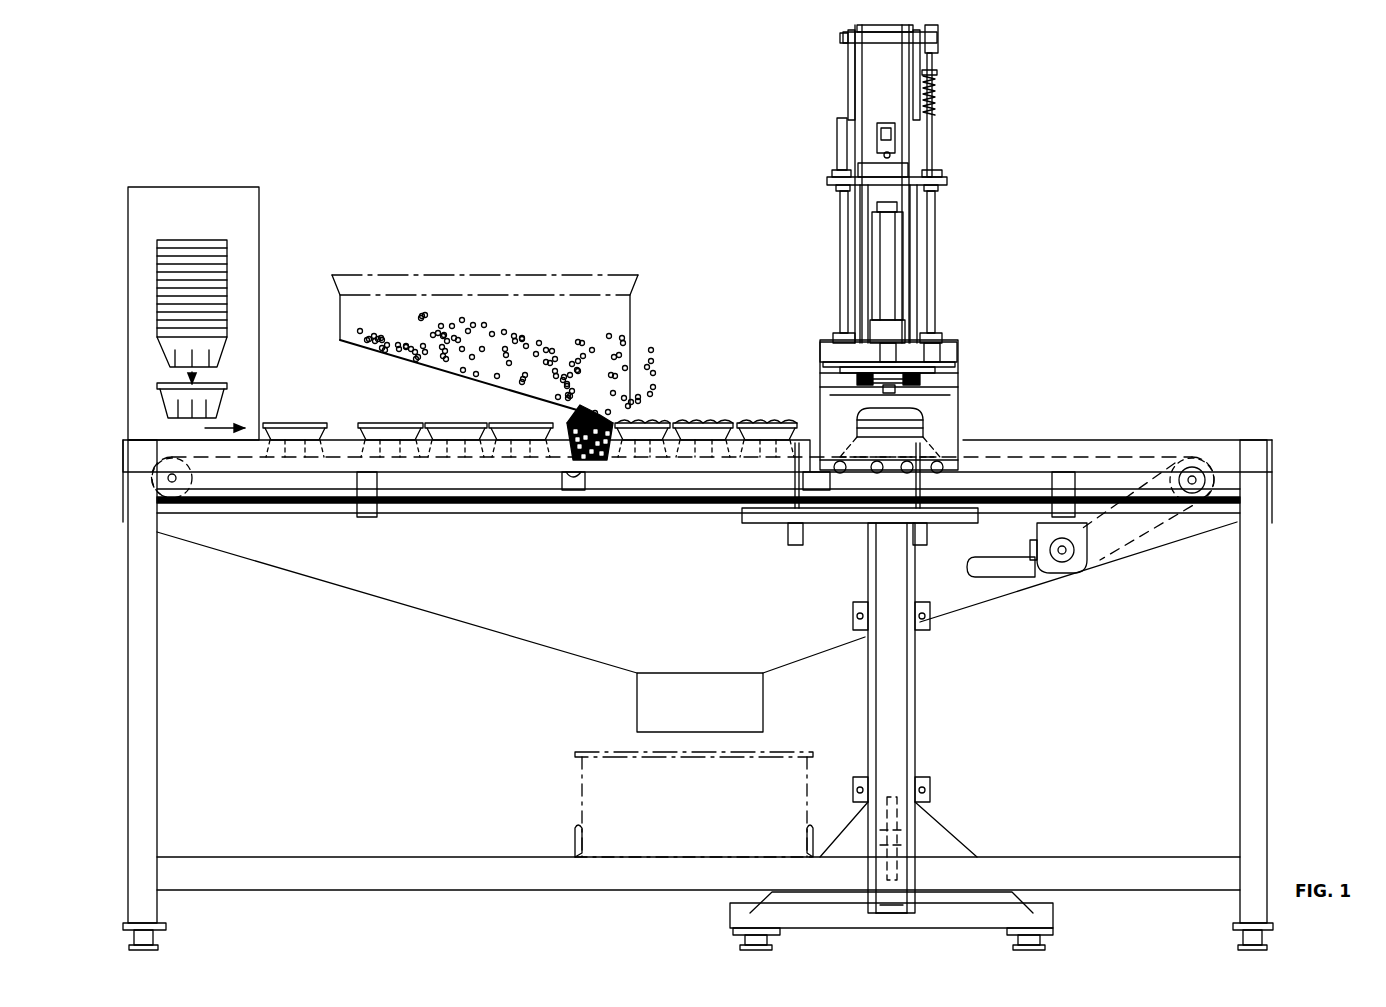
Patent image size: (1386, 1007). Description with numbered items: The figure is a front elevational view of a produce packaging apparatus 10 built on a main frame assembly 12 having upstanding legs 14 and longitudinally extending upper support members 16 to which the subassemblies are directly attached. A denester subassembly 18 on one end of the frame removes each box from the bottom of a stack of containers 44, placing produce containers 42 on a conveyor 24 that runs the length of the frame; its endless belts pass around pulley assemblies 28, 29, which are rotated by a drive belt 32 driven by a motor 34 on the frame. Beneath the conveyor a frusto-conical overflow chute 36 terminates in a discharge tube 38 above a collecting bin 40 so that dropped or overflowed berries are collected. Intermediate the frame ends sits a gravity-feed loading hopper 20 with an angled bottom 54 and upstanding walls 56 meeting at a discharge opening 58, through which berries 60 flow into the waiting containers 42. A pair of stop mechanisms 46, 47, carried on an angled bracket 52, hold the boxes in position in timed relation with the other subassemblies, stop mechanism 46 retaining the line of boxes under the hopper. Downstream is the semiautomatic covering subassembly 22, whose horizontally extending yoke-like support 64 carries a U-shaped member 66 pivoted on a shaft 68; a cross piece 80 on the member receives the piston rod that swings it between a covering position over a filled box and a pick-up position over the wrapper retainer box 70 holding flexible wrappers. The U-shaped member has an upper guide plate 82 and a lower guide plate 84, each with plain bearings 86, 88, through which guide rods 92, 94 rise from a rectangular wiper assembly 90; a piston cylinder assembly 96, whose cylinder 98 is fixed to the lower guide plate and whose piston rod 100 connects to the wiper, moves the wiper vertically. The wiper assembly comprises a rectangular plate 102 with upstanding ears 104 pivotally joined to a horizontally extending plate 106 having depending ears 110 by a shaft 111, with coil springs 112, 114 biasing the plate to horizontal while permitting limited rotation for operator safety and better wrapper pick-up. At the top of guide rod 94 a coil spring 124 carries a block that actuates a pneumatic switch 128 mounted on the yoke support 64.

The produce packaging apparatus 10 is at (465, 222).
The main frame assembly 12 is at (1292, 748).
The upstanding legs 14 is at (150, 620).
The upper support members 16 is at (499, 511).
The denester subassembly 18 is at (272, 226).
The loading hopper 20 is at (632, 305).
The semiautomatic covering subassembly 22 is at (950, 238).
The conveyor 24 is at (1138, 455).
The pulley assembly 28 is at (1200, 470).
The pulley assembly 29 is at (160, 464).
The drive belt 32 is at (1140, 553).
The motor 34 is at (1055, 570).
The overflow chute 36 is at (697, 597).
The discharge tube 38 is at (700, 702).
The collecting bin 40 is at (694, 804).
The produce containers 42 is at (366, 422).
The stack of containers 44 is at (150, 356).
The stop mechanism 46 is at (788, 538).
The stop mechanism 47 is at (918, 552).
The angled bracket 52 is at (960, 522).
The angled bottom 54 is at (448, 374).
The upstanding walls 56 is at (404, 311).
The discharge opening 58 is at (625, 416).
The berries 60 is at (568, 363).
The yoke-like support 64 is at (925, 66).
The U-shaped member 66 is at (914, 224).
The shaft 68 is at (888, 38).
The wrapper retainer box 70 is at (962, 433).
The cross piece 80 is at (905, 172).
The upper guide plate 82 is at (840, 186).
The lower guide plate 84 is at (831, 340).
The plain bearing 86 is at (948, 180).
The plain bearing 88 is at (940, 350).
The rectangular wiper assembly 90 is at (958, 362).
The guide rod 92 is at (843, 273).
The guide rod 94 is at (935, 285).
The piston cylinder assembly 96 is at (866, 243).
The cylinder 98 is at (892, 268).
The piston rod 100 is at (896, 352).
The rectangular plate 102 is at (925, 382).
The upstanding ears 104 is at (855, 385).
The horizontally extending plate 106 is at (860, 366).
The depending ears 110 is at (850, 375).
The shaft 111 is at (872, 402).
The coil spring 112 is at (842, 396).
The coil spring 114 is at (905, 386).
The coil spring 124 is at (936, 103).
The pneumatic switch 128 is at (940, 45).